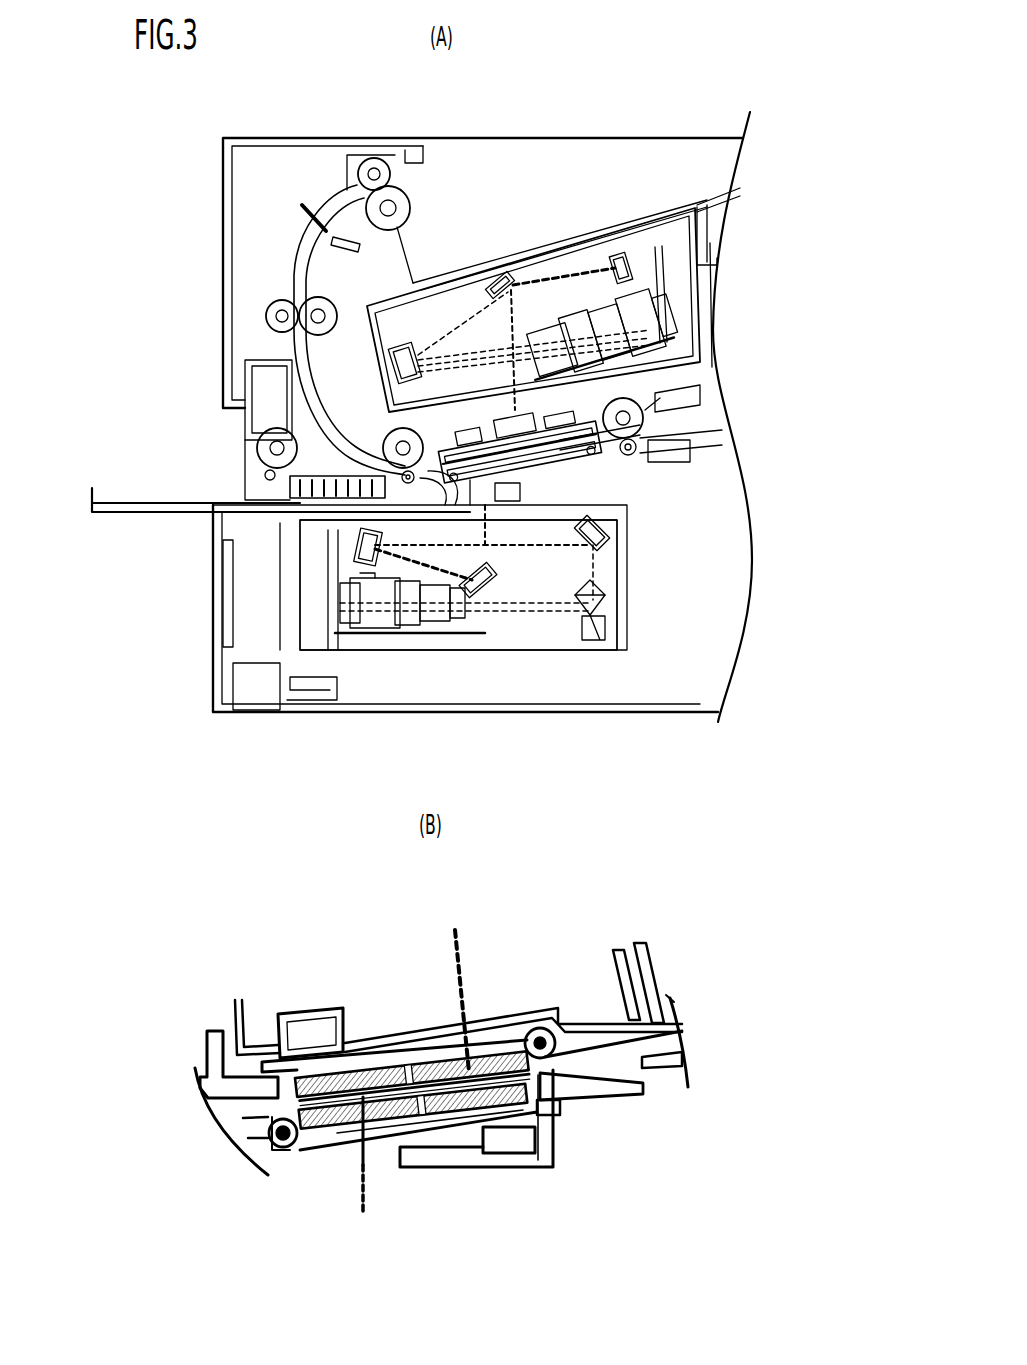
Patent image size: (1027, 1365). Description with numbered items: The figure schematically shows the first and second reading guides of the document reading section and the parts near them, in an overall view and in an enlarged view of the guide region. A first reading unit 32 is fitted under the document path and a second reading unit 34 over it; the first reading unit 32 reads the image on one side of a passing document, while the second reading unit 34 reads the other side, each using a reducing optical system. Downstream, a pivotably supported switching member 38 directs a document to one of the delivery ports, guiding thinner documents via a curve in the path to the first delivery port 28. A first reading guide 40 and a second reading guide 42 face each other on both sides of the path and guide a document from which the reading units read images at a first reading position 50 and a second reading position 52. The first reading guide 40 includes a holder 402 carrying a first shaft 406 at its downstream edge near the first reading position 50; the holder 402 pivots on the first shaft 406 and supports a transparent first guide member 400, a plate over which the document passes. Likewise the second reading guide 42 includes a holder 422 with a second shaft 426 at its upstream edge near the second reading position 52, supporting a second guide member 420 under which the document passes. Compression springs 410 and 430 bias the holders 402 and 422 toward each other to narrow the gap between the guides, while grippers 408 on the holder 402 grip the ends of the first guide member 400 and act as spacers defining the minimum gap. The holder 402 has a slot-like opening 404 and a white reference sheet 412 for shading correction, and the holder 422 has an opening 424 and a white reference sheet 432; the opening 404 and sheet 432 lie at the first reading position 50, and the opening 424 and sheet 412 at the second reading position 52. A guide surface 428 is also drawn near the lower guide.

The first delivery port 28 is at (514, 250).
The second reading unit 34 is at (462, 308).
The first reading unit 32 is at (636, 600).
The second reading guide 42 is at (428, 428).
The first reading guide 40 is at (578, 466).
The switching member 38 is at (414, 483).
The first guide member 400 is at (436, 1152).
The holder 402 is at (303, 1148).
The opening 404 is at (353, 1148).
The first shaft 406 is at (283, 1150).
The grippers 408 is at (545, 1076).
The compression spring 410 is at (520, 1152).
The white reference sheet 412 is at (583, 1140).
The second guide member 420 is at (380, 1020).
The holder 422 is at (503, 1040).
The opening 424 is at (447, 1047).
The second shaft 426 is at (547, 1028).
The guide plate 428 is at (297, 1102).
The compression spring 430 is at (278, 1020).
The white reference sheet 432 is at (363, 1020).
The first reading position 50 is at (375, 1106).
The second reading position 52 is at (483, 1068).